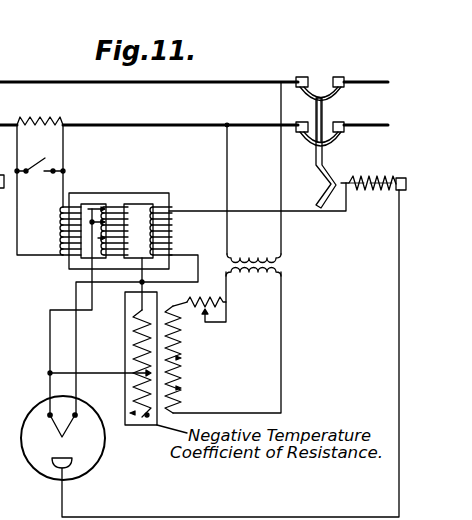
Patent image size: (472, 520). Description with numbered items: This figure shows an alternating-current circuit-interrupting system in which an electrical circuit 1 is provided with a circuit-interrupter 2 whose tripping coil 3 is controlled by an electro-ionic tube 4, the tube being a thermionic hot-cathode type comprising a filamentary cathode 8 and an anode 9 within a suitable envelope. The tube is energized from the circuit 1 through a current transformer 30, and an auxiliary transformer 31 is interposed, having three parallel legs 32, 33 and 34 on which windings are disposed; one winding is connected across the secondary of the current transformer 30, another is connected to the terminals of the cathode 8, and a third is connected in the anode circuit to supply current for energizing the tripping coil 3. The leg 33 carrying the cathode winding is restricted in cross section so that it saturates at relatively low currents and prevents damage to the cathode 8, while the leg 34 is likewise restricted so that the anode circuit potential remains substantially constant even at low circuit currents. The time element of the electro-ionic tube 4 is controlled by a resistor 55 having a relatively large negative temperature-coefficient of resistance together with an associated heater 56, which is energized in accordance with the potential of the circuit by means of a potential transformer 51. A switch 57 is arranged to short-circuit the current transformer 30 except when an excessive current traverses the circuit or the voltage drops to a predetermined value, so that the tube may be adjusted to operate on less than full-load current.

The electrical circuit 1 is at (179, 113).
The circuit-interrupter 2 is at (337, 138).
The tripping coil 3 is at (371, 191).
The electro-ionic tube 4 is at (93, 445).
The filamentary cathode 8 is at (55, 427).
The anode 9 is at (55, 470).
The current transformer 30 is at (46, 128).
The auxiliary transformer 31 is at (115, 193).
The transformer leg 32 is at (64, 228).
The transformer leg 33 is at (116, 231).
The transformer leg 34 is at (170, 222).
The potential transformer 51 is at (215, 277).
The resistor 55 is at (146, 329).
The heater 56 is at (182, 360).
The switch 57 is at (50, 163).